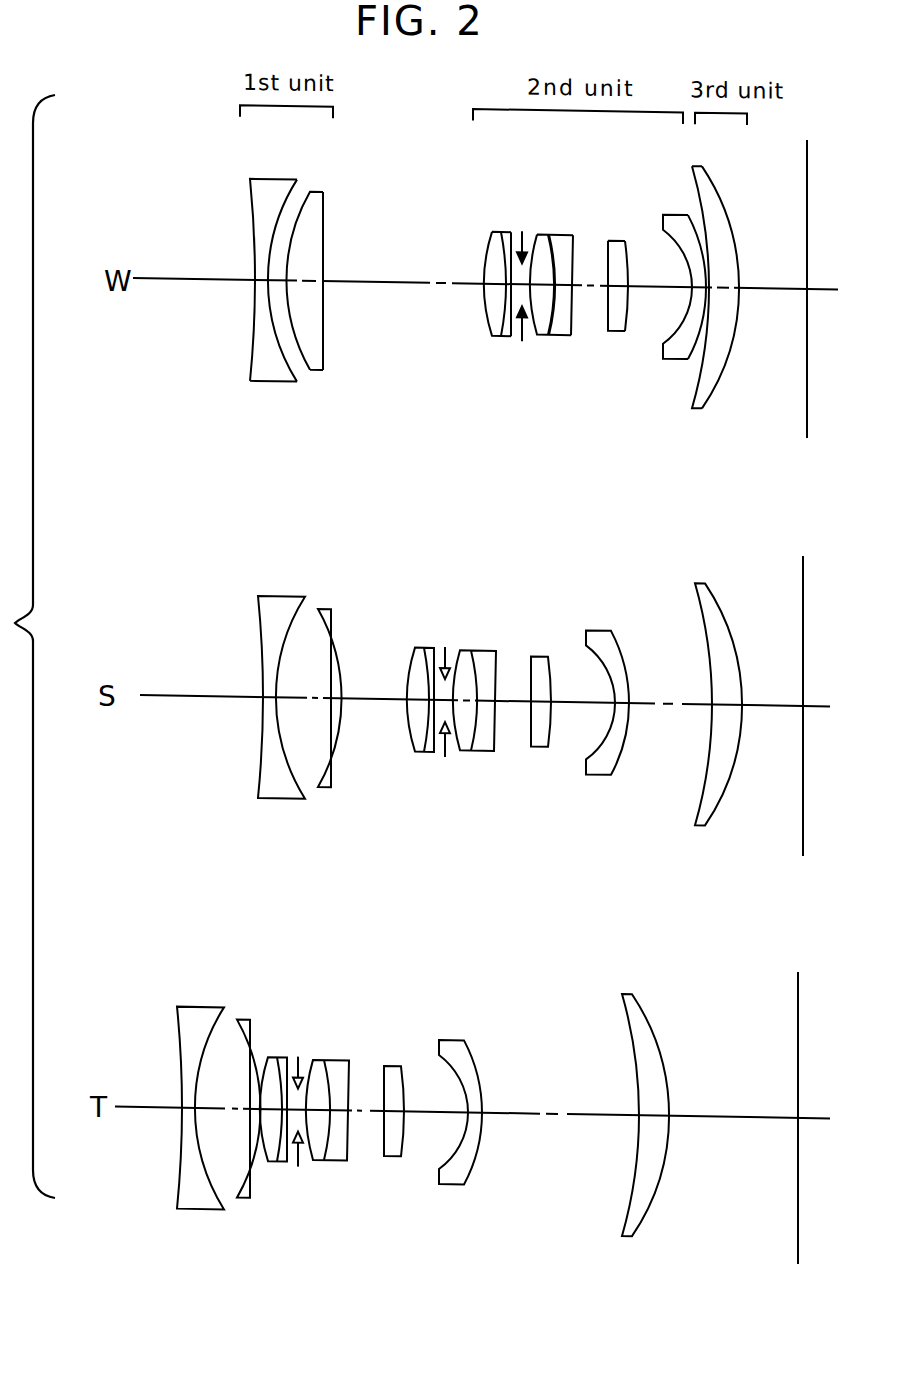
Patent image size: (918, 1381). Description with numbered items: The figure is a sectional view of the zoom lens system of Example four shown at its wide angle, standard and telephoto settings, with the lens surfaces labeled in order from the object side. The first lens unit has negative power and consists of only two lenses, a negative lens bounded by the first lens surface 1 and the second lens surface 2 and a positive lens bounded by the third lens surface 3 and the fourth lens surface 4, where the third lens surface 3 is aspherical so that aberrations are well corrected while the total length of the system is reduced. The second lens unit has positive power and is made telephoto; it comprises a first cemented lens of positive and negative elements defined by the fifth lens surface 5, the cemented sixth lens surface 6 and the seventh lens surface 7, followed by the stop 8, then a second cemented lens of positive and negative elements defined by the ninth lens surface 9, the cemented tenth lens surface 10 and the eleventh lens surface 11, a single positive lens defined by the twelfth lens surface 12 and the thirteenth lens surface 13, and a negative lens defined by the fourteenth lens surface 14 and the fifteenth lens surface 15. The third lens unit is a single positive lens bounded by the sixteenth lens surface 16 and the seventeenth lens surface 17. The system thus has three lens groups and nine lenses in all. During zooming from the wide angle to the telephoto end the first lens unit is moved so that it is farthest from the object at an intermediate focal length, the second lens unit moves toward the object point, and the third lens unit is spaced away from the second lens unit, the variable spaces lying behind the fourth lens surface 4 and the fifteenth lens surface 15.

The lens surface r1 1 is at (250, 209).
The lens surface r2 2 is at (280, 221).
The lens surface r3 3 is at (300, 217).
The lens surface r4 4 is at (323, 218).
The lens surface r5 5 is at (483, 258).
The lens surface r6 6 is at (499, 233).
The lens surface r7 7 is at (512, 232).
The stop 8 is at (534, 236).
The lens surface r9 9 is at (546, 236).
The lens surface r10 10 is at (548, 248).
The lens surface r11 11 is at (573, 236).
The lens surface r12 12 is at (610, 244).
The lens surface r13 13 is at (628, 239).
The lens surface r14 14 is at (680, 249).
The lens surface r15 15 is at (690, 221).
The lens surface r16 16 is at (695, 181).
The lens surface r17 17 is at (719, 192).